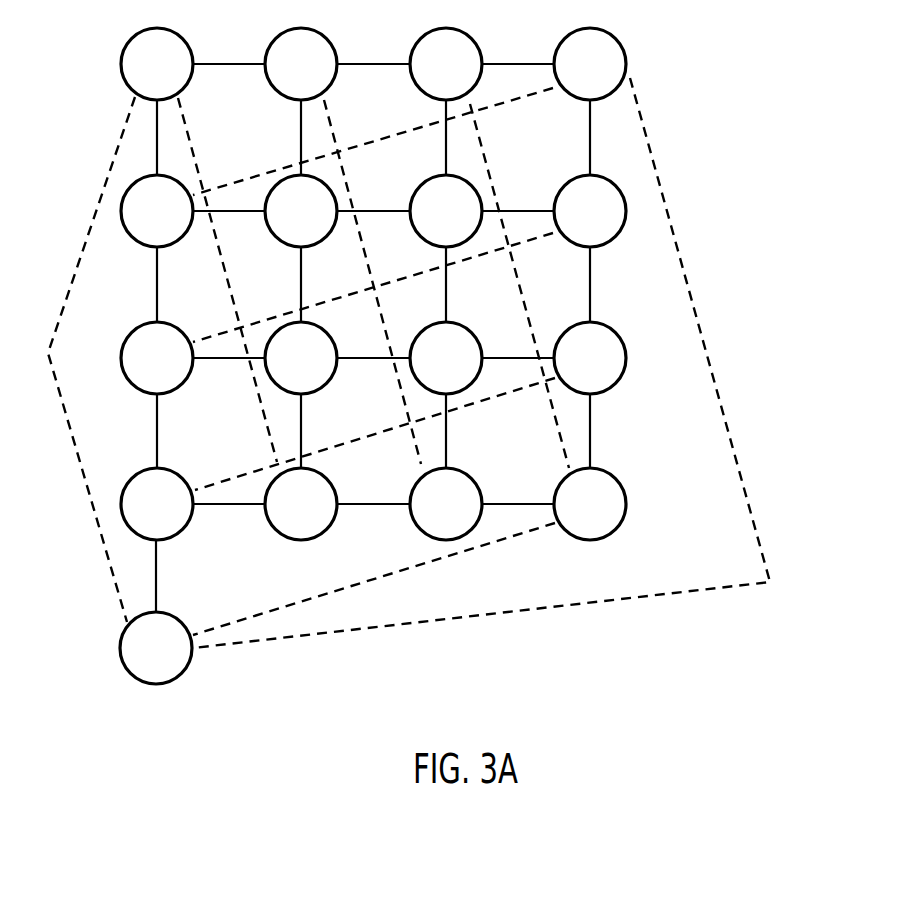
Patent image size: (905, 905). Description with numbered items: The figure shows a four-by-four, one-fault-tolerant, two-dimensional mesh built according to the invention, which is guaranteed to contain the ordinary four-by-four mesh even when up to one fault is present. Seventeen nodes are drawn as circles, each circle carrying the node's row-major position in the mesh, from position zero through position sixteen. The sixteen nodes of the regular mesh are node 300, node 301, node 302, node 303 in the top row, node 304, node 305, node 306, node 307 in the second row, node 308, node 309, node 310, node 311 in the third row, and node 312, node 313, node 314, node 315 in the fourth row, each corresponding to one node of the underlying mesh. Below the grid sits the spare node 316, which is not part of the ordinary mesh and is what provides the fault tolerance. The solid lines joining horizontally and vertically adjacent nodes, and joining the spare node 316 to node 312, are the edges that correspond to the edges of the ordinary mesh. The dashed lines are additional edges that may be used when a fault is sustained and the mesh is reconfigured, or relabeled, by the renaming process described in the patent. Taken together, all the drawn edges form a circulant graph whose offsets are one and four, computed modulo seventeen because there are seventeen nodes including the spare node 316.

The node 300 is at (191, 80).
The node 301 is at (336, 79).
The node 302 is at (418, 50).
The node 303 is at (624, 51).
The node 304 is at (172, 243).
The node 305 is at (320, 243).
The node 306 is at (421, 184).
The node 307 is at (612, 243).
The node 308 is at (178, 388).
The node 309 is at (323, 387).
The node 310 is at (467, 326).
The node 311 is at (626, 375).
The node 312 is at (178, 533).
The node 313 is at (335, 518).
The node 314 is at (465, 474).
The node 315 is at (626, 520).
The spare node 316 is at (188, 665).